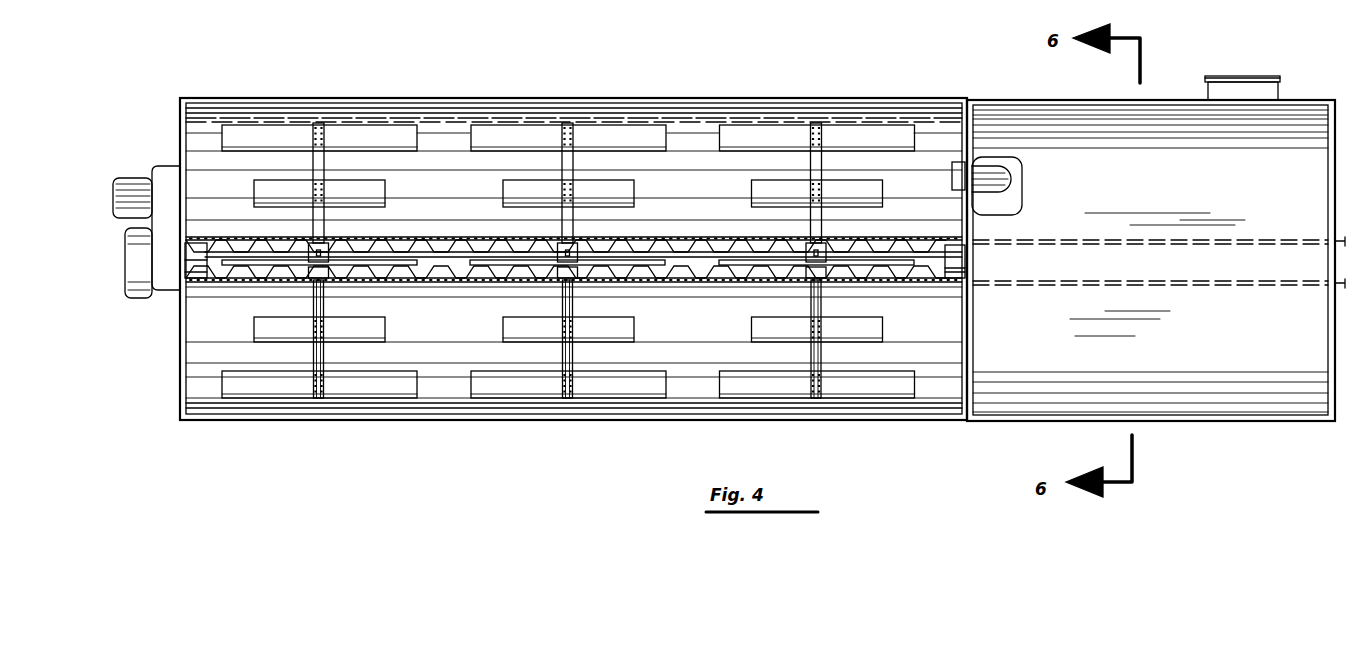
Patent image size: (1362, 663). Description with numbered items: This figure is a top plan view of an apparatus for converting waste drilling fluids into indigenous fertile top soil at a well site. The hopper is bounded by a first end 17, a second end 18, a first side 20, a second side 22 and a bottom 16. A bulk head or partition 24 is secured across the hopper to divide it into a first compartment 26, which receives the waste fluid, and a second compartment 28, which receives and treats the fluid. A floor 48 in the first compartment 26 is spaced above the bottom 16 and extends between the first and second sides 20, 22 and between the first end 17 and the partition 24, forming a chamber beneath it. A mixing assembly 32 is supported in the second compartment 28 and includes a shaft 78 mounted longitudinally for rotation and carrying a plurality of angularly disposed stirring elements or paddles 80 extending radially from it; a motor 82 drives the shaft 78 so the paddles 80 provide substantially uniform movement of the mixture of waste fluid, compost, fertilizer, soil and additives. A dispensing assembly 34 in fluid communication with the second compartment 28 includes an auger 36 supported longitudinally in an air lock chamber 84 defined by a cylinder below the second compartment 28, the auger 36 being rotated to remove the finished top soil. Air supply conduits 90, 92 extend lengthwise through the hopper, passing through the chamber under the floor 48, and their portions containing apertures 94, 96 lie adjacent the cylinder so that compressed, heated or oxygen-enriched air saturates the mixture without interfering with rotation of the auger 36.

The bottom 16 is at (718, 330).
The first end 17 is at (1337, 160).
The second end 18 is at (180, 341).
The first side 20 is at (615, 421).
The second side 22 is at (842, 100).
The bulk head or partition 24 is at (974, 225).
The first compartment 26 is at (1267, 160).
The second compartment 28 is at (442, 118).
The mixing assembly 32 is at (610, 118).
The dispensing assembly 34 is at (448, 283).
The auger 36 is at (453, 237).
The floor 48 is at (1246, 359).
The shaft 78 is at (392, 255).
The stirring elements or paddles 80 is at (642, 126).
The motor 82 is at (134, 176).
The air lock chamber 84 is at (918, 284).
The air supply conduit 90 is at (630, 287).
The air supply conduit 92 is at (688, 235).
The apertures 94 is at (507, 283).
The apertures 96 is at (893, 238).